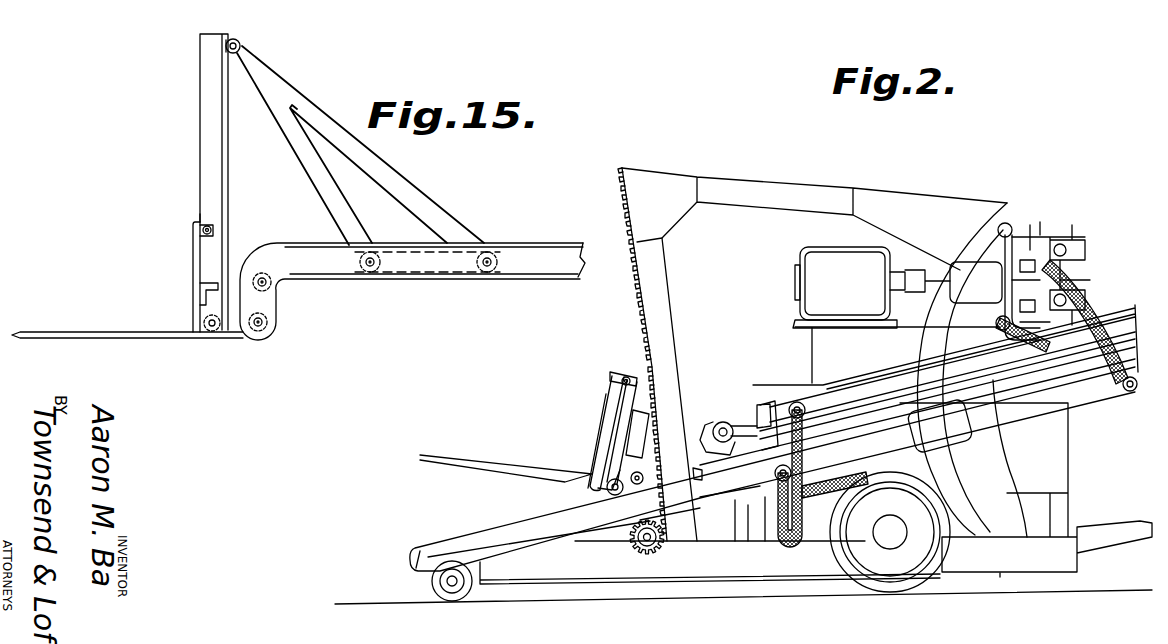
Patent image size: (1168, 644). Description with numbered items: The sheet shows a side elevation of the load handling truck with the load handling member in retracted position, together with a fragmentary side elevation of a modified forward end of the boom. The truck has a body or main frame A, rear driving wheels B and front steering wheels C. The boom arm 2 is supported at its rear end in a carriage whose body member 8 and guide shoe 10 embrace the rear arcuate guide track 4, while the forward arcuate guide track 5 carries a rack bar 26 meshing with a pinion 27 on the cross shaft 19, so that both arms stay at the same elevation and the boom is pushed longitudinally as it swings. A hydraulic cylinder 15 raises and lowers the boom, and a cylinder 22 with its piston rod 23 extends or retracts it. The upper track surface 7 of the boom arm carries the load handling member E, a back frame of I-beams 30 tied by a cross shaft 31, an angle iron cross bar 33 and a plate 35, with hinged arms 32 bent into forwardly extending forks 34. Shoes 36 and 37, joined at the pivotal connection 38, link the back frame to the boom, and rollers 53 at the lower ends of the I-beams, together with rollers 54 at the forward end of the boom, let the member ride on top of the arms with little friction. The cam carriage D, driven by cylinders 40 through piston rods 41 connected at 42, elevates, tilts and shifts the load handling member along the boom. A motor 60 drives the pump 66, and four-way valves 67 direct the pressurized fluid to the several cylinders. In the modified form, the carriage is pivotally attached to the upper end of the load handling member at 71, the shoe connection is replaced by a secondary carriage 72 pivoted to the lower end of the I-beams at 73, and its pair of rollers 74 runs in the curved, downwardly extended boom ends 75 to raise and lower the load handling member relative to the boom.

In FIG. 2, the boom arm 2 is at (532, 524).
In FIG. 2, the rear arcuate guide track 4 is at (968, 476).
In FIG. 2, the forward arcuate guide track 5 is at (641, 285).
In FIG. 2, the upper track surface 7 is at (486, 528).
In FIG. 2, the carriage body member 8 is at (990, 448).
In FIG. 2, the guide shoe 10 is at (940, 426).
In FIG. 2, the hydraulic cylinder 15 is at (752, 532).
In FIG. 2, the cross shaft 19 is at (632, 546).
In FIG. 2, the hydraulic cylinder 22 is at (822, 543).
In FIG. 2, the piston rod 23 is at (715, 540).
In FIG. 2, the rack bar 26 is at (636, 263).
In FIG. 2, the pinion 27 is at (640, 545).
In FIG. 15, the I-beam 30 is at (200, 259).
In FIG. 2, the I-beam 30 is at (611, 434).
In FIG. 15, the cross shaft 31 is at (201, 220).
In FIG. 2, the cross shaft 31 is at (627, 374).
In FIG. 15, the arm 32 is at (191, 242).
In FIG. 2, the arm 32 is at (612, 388).
In FIG. 15, the angle iron cross bar 33 is at (207, 295).
In FIG. 2, the angle iron cross bar 33 is at (610, 451).
In FIG. 15, the fork 34 is at (66, 331).
In FIG. 2, the fork 34 is at (496, 460).
In FIG. 2, the plate 35 is at (611, 410).
In FIG. 2, the shoe 36 is at (668, 400).
In FIG. 2, the shoe 37 is at (700, 486).
In FIG. 2, the pivotal connection 38 is at (650, 464).
In FIG. 2, the cylinder 40 is at (896, 374).
In FIG. 2, the piston rod 41 is at (731, 423).
In FIG. 2, the piston rod connection 42 is at (720, 422).
In FIG. 2, the roller 53 is at (596, 492).
In FIG. 2, the roller 54 is at (410, 558).
In FIG. 2, the motor 60 is at (896, 315).
In FIG. 2, the pump 66 is at (976, 282).
In FIG. 2, the four-way valve 67 is at (1025, 225).
In FIG. 15, the pivotal attachment 71 is at (241, 45).
In FIG. 15, the secondary carriage 72 is at (238, 336).
In FIG. 15, the pivotal attachment 73 is at (214, 336).
In FIG. 15, the roller 74 is at (273, 279).
In FIG. 15, the curved boom end 75 is at (258, 262).
In FIG. 2, the main frame A is at (658, 586).
In FIG. 2, the rear driving wheel B is at (885, 600).
In FIG. 2, the front steering wheel C is at (451, 600).
In FIG. 2, the cam carriage D is at (790, 380).
In FIG. 15, the load handling member E is at (190, 288).
In FIG. 2, the load handling member E is at (598, 398).